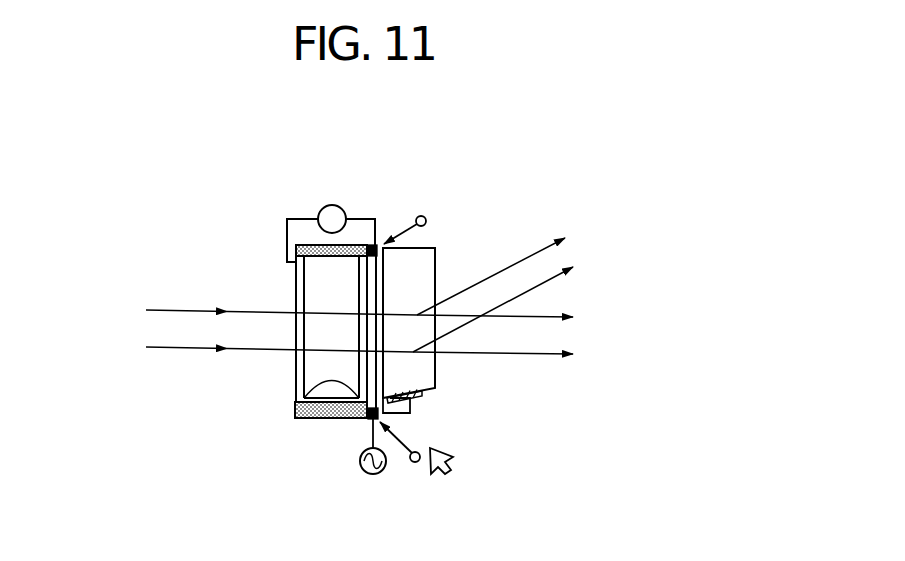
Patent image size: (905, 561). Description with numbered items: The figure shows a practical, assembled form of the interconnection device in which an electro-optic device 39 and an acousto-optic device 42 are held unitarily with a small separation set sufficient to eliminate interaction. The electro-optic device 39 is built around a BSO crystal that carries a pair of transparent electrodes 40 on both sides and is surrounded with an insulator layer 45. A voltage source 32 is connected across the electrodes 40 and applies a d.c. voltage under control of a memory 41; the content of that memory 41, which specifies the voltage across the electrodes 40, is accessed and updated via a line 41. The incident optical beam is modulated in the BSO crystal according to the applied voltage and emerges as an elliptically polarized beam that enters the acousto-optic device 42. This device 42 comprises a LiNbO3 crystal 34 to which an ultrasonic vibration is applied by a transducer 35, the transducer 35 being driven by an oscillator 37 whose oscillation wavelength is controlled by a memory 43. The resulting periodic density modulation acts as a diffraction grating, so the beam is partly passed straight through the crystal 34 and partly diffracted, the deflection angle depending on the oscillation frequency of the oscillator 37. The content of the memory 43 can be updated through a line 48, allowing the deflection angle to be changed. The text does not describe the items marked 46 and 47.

The voltage source 32 is at (332, 205).
The LiNbO3 crystal 34 is at (413, 258).
The transducer 35 is at (422, 397).
The oscillator 37 is at (373, 474).
The electro-optic device 39 is at (325, 358).
The transparent electrodes 40 is at (295, 292).
The memory / line 41 is at (370, 245).
The acousto-optic device 42 is at (427, 269).
The memory 43 is at (368, 420).
The insulator layer 45 is at (300, 245).
The cursor / pointer 46 is at (458, 472).
The probe terminal 47 is at (419, 219).
The line 48 is at (410, 458).